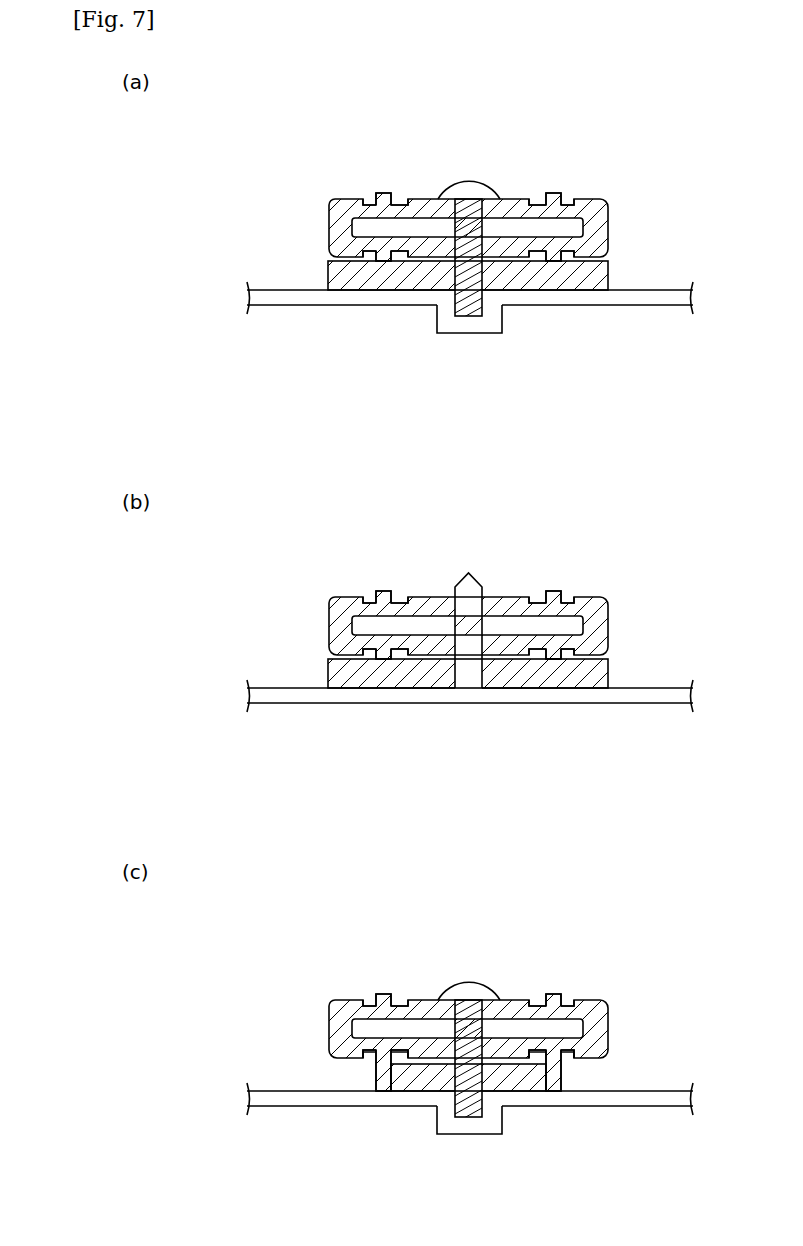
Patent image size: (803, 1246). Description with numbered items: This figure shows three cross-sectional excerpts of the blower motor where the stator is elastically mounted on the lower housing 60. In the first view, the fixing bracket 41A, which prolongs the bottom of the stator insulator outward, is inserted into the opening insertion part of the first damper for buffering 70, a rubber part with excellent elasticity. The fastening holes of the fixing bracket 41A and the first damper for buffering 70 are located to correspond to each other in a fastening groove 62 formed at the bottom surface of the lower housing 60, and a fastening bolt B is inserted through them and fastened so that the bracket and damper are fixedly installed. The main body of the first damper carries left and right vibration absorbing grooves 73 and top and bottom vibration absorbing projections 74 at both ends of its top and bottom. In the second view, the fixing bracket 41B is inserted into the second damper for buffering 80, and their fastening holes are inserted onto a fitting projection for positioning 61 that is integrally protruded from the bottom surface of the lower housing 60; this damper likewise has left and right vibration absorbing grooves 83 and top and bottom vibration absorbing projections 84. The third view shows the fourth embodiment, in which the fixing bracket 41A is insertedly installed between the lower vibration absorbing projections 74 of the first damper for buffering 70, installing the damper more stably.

The first damper for buffering 70 is at (613, 175).
The second damper for buffering 80 is at (613, 575).
The left and right vibration absorbing grooves 73 is at (367, 200).
The top and bottom vibration absorbing projections 74 is at (385, 192).
The fastening bolt B is at (470, 179).
The fitting projection for positioning 61 is at (468, 573).
The fastening groove 62 is at (478, 316).
The lower housing 60 is at (313, 298).
The fixing bracket 41A is at (577, 284).
The fixing bracket 41B is at (422, 677).
The left and right vibration absorbing grooves 83 is at (366, 598).
The top and bottom vibration absorbing projections 84 is at (385, 591).